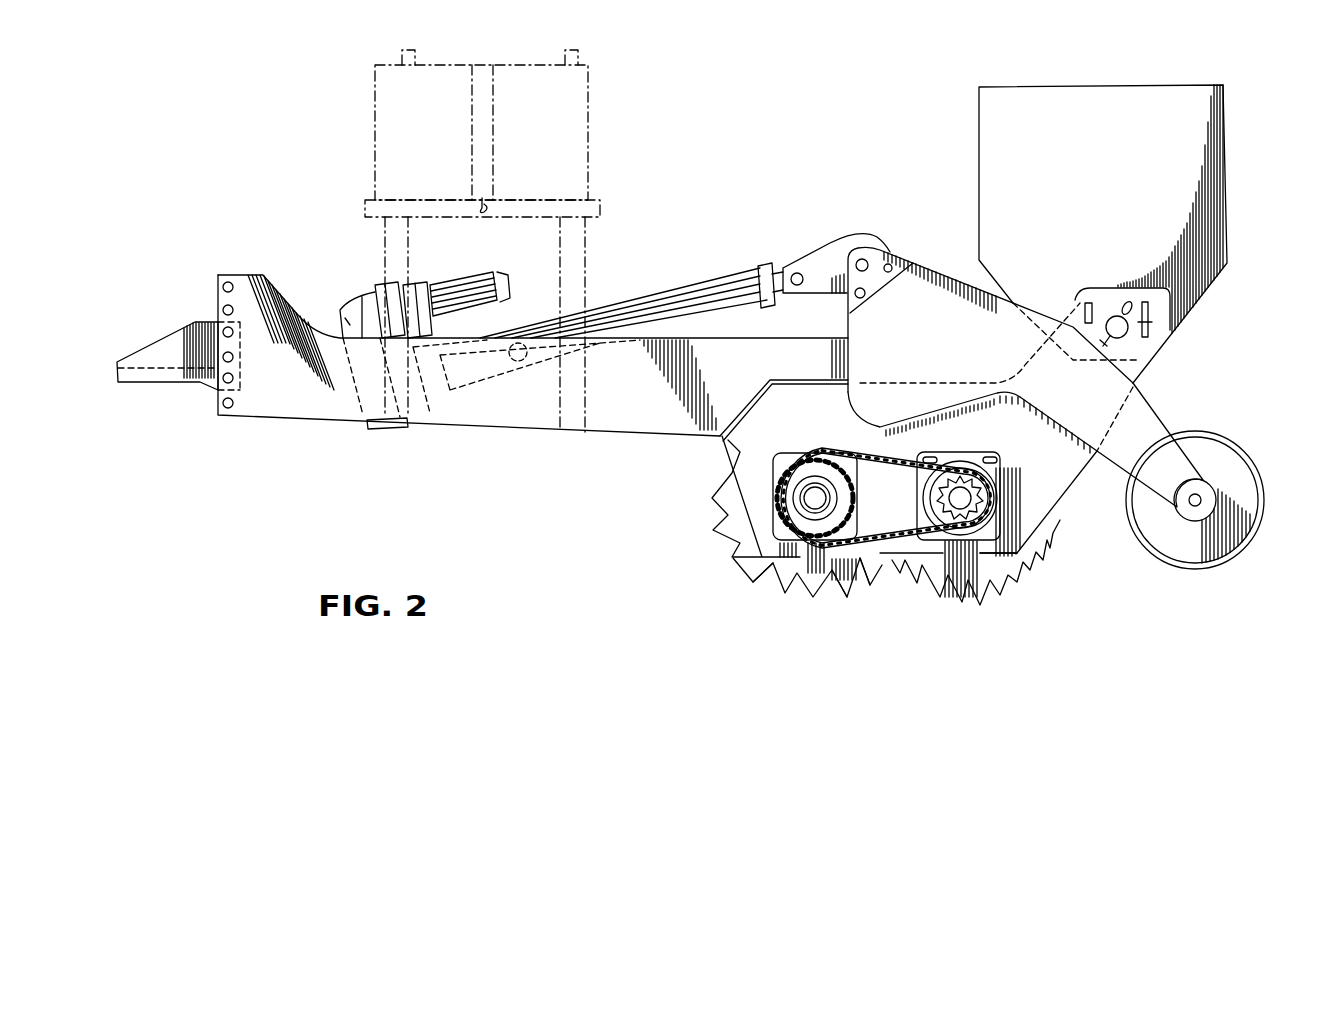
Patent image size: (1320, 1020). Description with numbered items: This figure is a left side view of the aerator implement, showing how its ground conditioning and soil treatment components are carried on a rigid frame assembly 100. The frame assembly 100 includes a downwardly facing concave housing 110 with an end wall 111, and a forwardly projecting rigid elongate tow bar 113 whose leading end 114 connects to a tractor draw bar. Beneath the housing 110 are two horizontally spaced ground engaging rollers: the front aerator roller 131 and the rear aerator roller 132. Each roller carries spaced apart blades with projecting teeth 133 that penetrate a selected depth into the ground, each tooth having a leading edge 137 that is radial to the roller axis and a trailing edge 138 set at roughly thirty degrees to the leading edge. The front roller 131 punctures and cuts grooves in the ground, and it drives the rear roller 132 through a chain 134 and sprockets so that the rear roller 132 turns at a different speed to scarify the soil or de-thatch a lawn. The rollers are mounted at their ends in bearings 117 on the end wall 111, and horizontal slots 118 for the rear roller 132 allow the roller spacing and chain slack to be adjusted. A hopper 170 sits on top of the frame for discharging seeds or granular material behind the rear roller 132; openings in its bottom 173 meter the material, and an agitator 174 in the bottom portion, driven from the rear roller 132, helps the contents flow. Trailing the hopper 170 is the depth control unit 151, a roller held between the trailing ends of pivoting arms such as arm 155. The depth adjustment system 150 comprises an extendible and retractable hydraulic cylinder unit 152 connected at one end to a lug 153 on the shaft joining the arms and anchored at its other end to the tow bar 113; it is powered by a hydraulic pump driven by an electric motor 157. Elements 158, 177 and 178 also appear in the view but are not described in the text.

The rigid frame assembly 100 is at (822, 421).
The housing 110 is at (738, 404).
The end wall 111 is at (743, 452).
The tow bar 113 is at (607, 408).
The leading end 114 is at (160, 355).
The bearings 117 is at (943, 456).
The slots 118 is at (1000, 463).
The aerator roller 131 is at (802, 592).
The aerator roller 132 is at (956, 598).
The teeth 133 is at (768, 572).
The chain 134 is at (885, 545).
The leading edge 137 is at (838, 590).
The trailing edge 138 is at (868, 605).
The depth adjustment system 150 is at (725, 272).
The depth control unit 151 is at (1212, 566).
The hydraulic cylinder unit 152 is at (640, 305).
The lug 153 is at (830, 262).
The arm 155 is at (922, 266).
The electric motor 157 is at (453, 290).
The mounting bracket 158 is at (345, 322).
The hopper 170 is at (978, 130).
The bottom 173 is at (1130, 375).
The agitator 174 is at (1100, 290).
The nut 177 is at (1165, 318).
The bolt 178 is at (1150, 312).